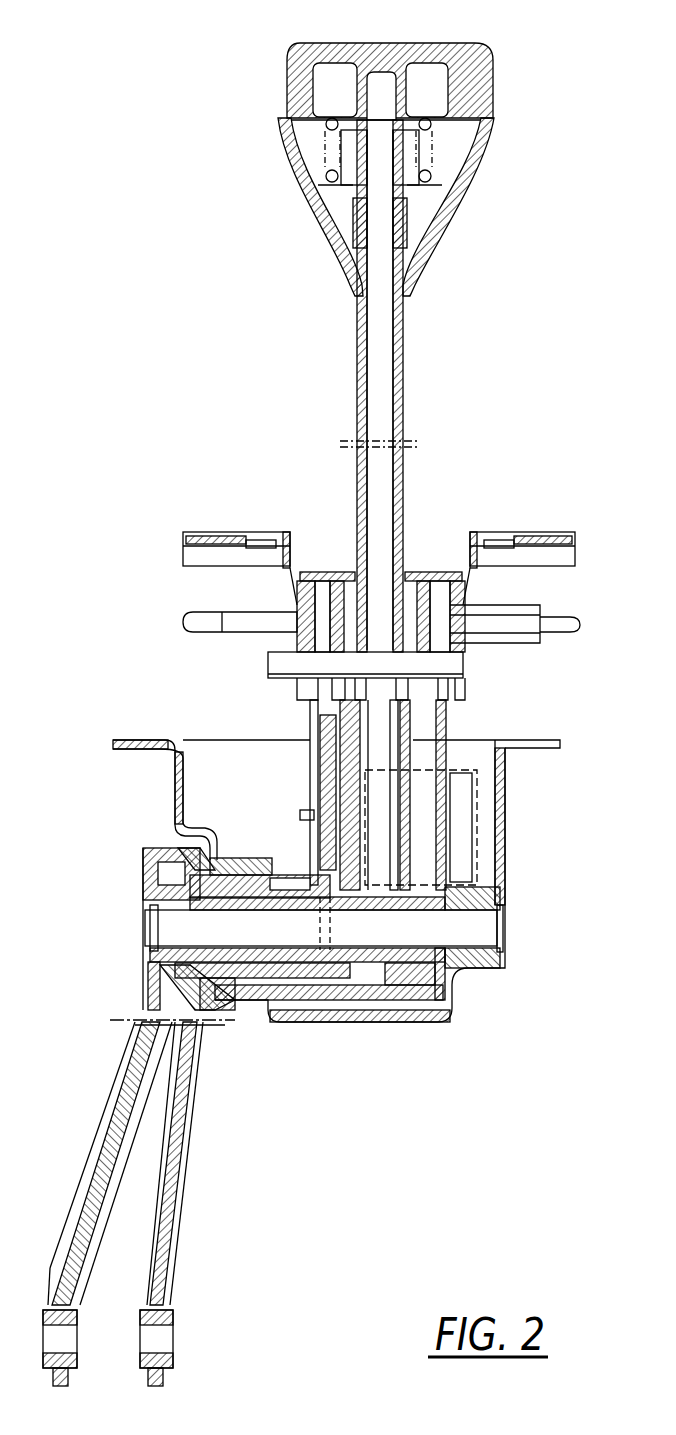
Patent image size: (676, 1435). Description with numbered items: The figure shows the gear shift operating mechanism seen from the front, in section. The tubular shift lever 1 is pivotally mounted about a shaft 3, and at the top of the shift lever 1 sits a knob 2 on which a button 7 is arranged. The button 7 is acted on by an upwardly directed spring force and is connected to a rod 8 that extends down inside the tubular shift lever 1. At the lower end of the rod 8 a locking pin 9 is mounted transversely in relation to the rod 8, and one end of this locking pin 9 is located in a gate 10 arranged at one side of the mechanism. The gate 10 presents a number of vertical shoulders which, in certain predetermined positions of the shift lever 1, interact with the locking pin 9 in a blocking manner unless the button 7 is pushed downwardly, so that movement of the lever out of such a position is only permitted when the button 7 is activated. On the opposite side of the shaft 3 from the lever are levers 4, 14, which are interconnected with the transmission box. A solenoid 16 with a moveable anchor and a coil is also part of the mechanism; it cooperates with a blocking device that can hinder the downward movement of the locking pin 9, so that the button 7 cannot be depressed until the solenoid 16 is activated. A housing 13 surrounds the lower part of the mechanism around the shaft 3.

The shift lever 1 is at (406, 338).
The knob 2 is at (478, 125).
The shaft 3 is at (160, 926).
The lever 4 is at (118, 1142).
The button 7 is at (385, 58).
The rod 8 is at (390, 322).
The locking pin 9 is at (275, 668).
The gate 10 is at (292, 704).
The housing 13 is at (505, 826).
The lever 14 is at (186, 1155).
The solenoid 16 is at (305, 812).